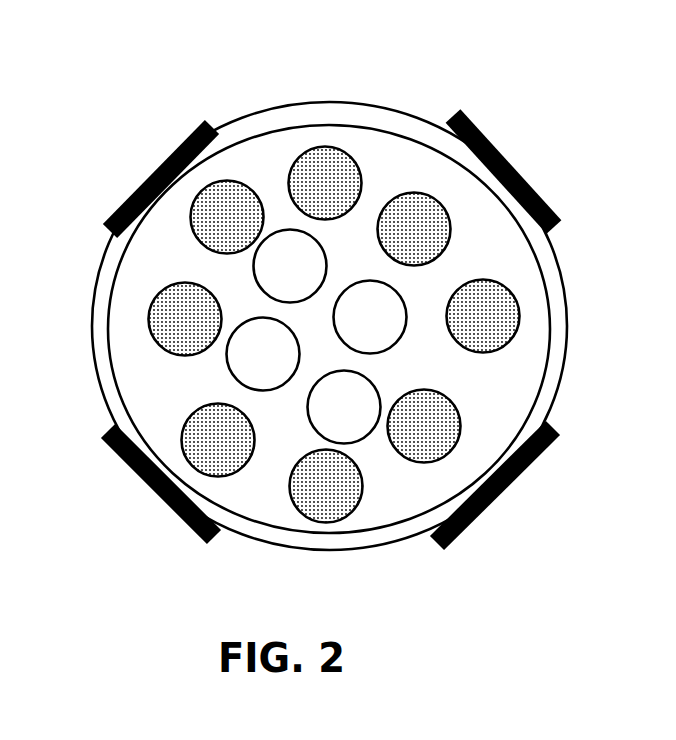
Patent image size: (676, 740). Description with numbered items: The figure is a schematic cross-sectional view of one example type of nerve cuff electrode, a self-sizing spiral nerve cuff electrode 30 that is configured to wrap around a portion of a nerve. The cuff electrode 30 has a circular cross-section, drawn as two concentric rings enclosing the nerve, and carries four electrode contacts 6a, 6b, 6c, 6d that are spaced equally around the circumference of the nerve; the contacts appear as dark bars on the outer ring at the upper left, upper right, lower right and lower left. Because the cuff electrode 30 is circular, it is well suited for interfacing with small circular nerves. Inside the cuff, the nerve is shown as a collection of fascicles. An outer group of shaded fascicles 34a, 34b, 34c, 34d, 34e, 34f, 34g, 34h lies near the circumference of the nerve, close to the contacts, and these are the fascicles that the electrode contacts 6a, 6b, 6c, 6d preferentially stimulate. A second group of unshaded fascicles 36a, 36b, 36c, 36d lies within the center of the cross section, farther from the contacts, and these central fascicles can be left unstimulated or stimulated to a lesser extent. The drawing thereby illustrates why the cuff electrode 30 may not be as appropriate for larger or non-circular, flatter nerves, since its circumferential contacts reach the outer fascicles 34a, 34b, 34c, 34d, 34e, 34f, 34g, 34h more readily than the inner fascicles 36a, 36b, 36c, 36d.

The self-sizing spiral nerve cuff electrode 30 is at (537, 73).
The electrode contact 6a is at (537, 192).
The electrode contact 6b is at (500, 493).
The electrode contact 6c is at (165, 508).
The electrode contact 6d is at (155, 172).
The fascicle 34a is at (414, 229).
The fascicle 34b is at (483, 316).
The fascicle 34c is at (424, 426).
The fascicle 34d is at (326, 486).
The fascicle 34e is at (218, 440).
The fascicle 34f is at (185, 319).
The fascicle 34g is at (227, 217).
The fascicle 34h is at (325, 183).
The fascicle 36a is at (370, 317).
The fascicle 36b is at (344, 407).
The fascicle 36c is at (263, 354).
The fascicle 36d is at (290, 266).